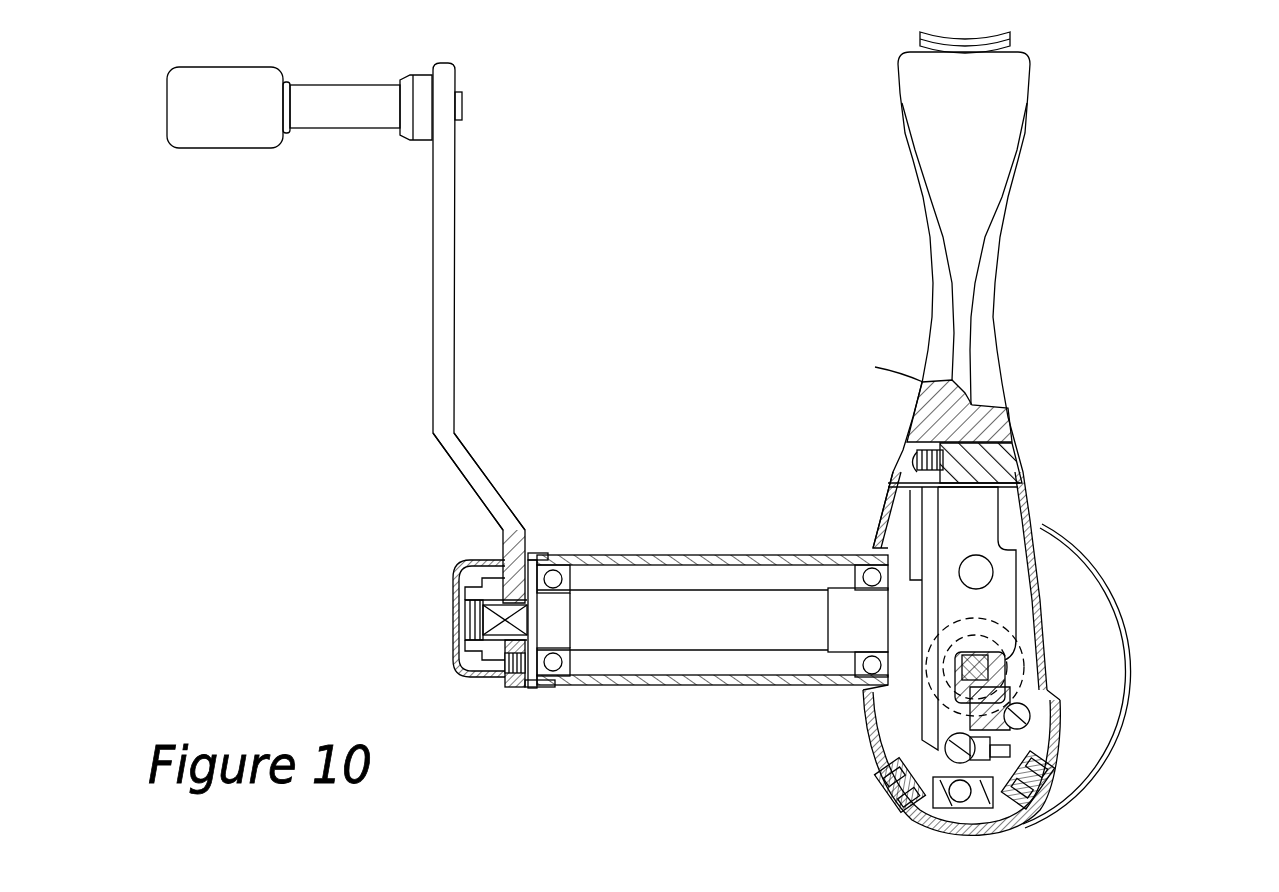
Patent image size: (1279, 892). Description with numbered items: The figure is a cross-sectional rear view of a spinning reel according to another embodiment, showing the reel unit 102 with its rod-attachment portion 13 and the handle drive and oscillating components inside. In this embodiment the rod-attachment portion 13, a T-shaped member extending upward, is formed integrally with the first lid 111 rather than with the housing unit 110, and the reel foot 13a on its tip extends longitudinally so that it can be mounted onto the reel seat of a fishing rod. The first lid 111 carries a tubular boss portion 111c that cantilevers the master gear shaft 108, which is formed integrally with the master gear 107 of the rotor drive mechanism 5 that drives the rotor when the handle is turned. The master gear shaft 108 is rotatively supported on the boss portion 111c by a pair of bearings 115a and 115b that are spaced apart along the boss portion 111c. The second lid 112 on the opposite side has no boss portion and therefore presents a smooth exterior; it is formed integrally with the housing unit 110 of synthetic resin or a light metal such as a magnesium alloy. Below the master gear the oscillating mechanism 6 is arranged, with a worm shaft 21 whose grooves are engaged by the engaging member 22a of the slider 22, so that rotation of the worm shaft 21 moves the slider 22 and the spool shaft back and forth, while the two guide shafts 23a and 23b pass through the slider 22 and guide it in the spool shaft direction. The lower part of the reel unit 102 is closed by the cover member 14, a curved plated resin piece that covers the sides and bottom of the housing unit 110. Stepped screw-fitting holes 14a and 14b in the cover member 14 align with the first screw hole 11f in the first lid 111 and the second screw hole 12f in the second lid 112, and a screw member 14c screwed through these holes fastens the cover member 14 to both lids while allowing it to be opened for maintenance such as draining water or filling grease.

The rotor drive mechanism 5 is at (903, 520).
The oscillating mechanism 6 is at (1032, 736).
The first screw hole 11f is at (905, 750).
The second screw hole 12f is at (1030, 840).
The rod-attachment portion 13 is at (978, 300).
The reel foot 13a is at (970, 50).
The cover member 14 is at (1055, 702).
The stepped screw-fitting hole 14a is at (887, 796).
The stepped screw-fitting hole 14b is at (1043, 812).
The screw member 14c is at (870, 782).
The worm shaft 21 is at (878, 728).
The slider 22 is at (1030, 750).
The engaging member 22a is at (938, 694).
The guide shaft 23a is at (1050, 716).
The guide shaft 23b is at (912, 832).
The reel unit 102 is at (1012, 355).
The master gear 107 is at (925, 505).
The master gear shaft 108 is at (665, 630).
The housing unit 110 is at (930, 822).
The first lid 111 is at (888, 477).
The tubular boss portion 111c is at (760, 556).
The second lid 112 is at (1035, 500).
The bearing 115a is at (553, 572).
The bearing 115b is at (872, 568).